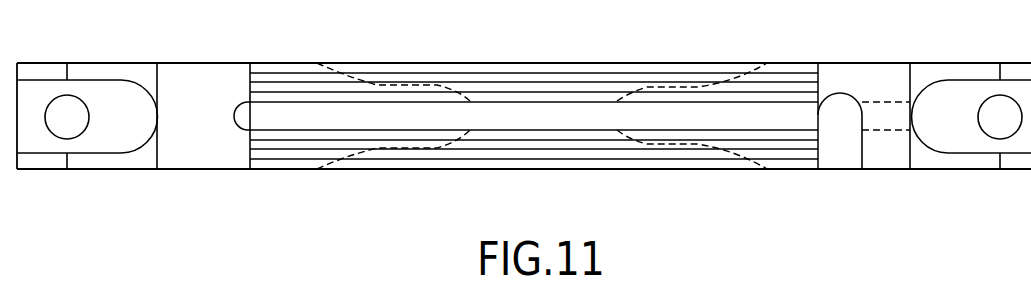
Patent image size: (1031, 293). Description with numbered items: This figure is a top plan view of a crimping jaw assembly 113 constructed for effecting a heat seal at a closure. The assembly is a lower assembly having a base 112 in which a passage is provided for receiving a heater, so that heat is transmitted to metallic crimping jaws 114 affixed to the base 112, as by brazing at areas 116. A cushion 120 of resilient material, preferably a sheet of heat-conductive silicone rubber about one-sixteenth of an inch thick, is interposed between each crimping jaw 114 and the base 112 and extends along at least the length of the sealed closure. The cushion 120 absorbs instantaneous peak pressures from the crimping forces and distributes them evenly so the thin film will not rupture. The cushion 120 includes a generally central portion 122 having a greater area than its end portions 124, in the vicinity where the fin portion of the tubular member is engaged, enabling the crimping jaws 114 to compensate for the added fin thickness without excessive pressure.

The base 112 is at (137, 156).
The crimping jaw assembly 113 is at (200, 170).
The crimping jaws 114 is at (623, 73).
The areas 116 is at (800, 92).
The cushion 120 is at (556, 85).
The central portion 122 is at (512, 80).
The end portions 124 is at (376, 72).